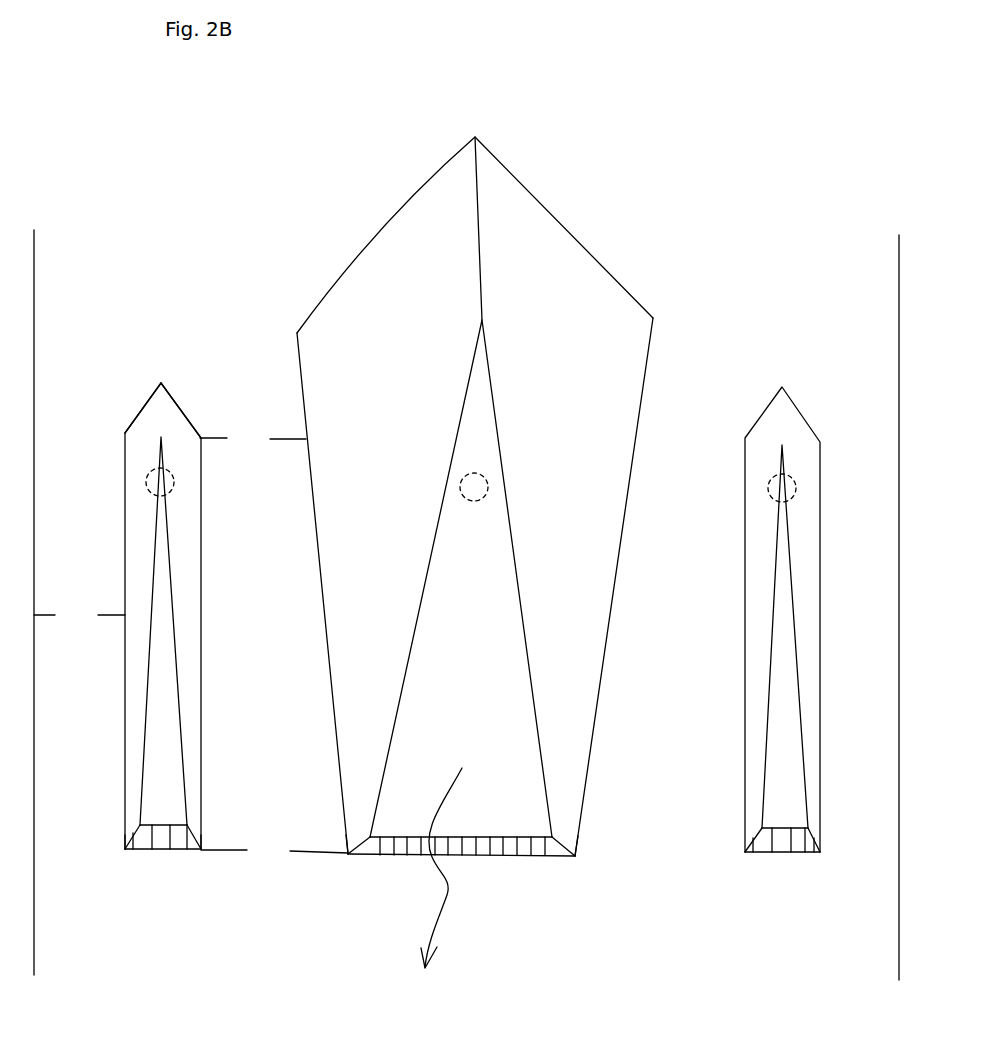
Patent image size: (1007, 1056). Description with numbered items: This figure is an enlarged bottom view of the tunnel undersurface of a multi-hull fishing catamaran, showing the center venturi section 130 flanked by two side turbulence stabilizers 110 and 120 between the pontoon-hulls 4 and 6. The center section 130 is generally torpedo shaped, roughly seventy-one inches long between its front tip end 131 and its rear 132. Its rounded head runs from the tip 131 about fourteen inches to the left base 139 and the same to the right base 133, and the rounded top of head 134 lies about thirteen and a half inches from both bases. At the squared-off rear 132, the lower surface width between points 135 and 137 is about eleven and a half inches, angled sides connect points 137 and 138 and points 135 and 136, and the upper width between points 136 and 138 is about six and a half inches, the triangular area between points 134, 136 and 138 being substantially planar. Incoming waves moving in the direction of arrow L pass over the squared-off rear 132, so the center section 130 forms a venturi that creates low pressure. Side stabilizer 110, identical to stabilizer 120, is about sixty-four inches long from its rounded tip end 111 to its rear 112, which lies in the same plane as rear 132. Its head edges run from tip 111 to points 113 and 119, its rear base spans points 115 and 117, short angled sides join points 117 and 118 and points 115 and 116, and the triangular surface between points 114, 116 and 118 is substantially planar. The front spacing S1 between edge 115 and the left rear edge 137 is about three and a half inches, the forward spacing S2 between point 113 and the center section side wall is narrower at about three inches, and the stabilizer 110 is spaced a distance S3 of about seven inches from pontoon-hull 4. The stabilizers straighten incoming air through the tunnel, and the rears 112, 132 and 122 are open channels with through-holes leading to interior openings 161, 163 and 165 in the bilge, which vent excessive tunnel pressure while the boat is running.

The pontoon-hull 4 is at (34, 280).
The pontoon-hull 6 is at (899, 283).
The side turbulence stabilizer 110 is at (156, 613).
The rounded tip end 111 is at (161, 383).
The rear 112 is at (160, 849).
The point 113 is at (200, 438).
The point 114 is at (161, 437).
The edge 115 is at (201, 849).
The point 116 is at (187, 825).
The point 117 is at (125, 849).
The point 118 is at (140, 825).
The point 119 is at (125, 433).
The side turbulence stabilizer 120 is at (814, 623).
The base of third pad 122 is at (782, 843).
The center venturi section 130 is at (486, 512).
The front tip end 131 is at (475, 137).
The rear 132 is at (498, 847).
The right base 133 is at (653, 318).
The rounded top of head 134 is at (482, 320).
The point 135 is at (575, 856).
The point 136 is at (552, 837).
The left rear edge 137 is at (348, 854).
The point 138 is at (370, 837).
The left base 139 is at (297, 333).
The interior opening 161 is at (173, 492).
The interior opening 163 is at (488, 490).
The interior opening 165 is at (797, 495).
The front spacing S1 is at (274, 851).
The forward spacing S2 is at (253, 440).
The distance S3 is at (79, 615).
The arrow L is at (437, 868).